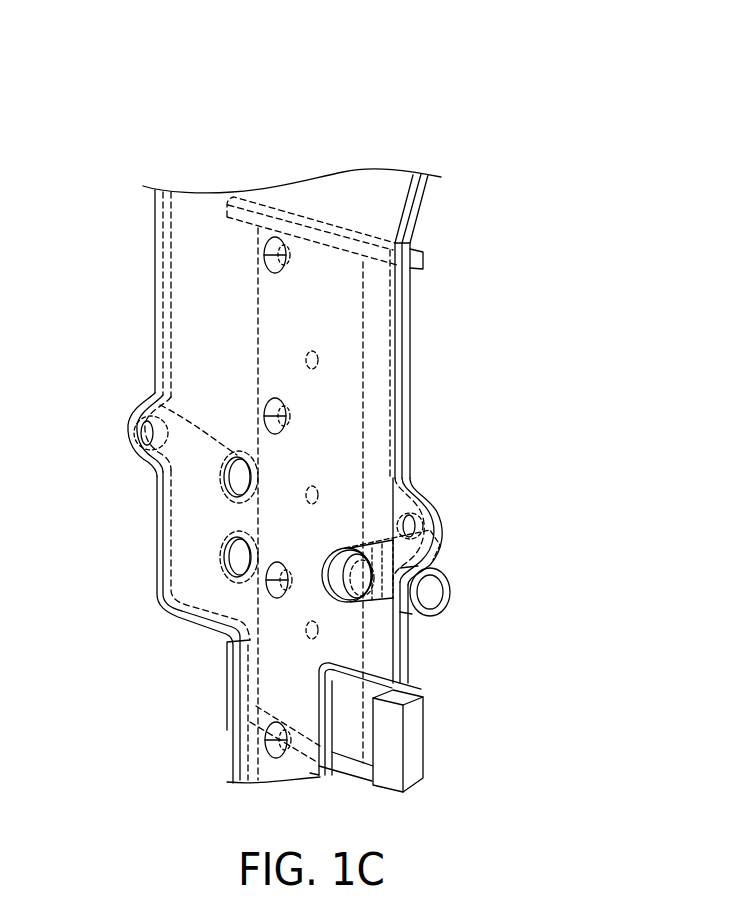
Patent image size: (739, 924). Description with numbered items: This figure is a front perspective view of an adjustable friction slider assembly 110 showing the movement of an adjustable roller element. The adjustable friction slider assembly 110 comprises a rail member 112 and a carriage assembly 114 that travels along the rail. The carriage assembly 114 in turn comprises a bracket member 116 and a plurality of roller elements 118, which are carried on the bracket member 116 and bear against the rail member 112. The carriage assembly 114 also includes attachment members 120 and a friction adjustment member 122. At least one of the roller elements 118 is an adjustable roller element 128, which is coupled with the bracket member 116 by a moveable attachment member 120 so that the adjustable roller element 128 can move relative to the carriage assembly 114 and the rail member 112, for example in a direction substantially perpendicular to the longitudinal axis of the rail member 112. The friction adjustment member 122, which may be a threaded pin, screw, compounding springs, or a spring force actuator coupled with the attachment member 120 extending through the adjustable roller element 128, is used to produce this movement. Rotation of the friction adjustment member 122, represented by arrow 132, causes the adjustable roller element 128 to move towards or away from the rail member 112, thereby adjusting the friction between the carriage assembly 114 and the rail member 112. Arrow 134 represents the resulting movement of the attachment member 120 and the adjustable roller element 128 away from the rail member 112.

The adjustable friction slider assembly 110 is at (545, 73).
The rail member 112 is at (348, 718).
The carriage assembly 114 is at (132, 287).
The bracket member 116 is at (377, 193).
The roller element 118 is at (152, 402).
The attachment member 120 is at (236, 472).
The friction adjustment member 122 is at (428, 594).
The adjustable roller element 128 is at (432, 512).
The arrow 132 is at (426, 614).
The arrow 134 is at (340, 573).